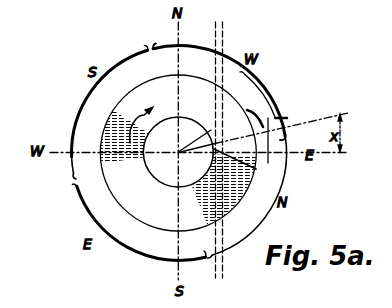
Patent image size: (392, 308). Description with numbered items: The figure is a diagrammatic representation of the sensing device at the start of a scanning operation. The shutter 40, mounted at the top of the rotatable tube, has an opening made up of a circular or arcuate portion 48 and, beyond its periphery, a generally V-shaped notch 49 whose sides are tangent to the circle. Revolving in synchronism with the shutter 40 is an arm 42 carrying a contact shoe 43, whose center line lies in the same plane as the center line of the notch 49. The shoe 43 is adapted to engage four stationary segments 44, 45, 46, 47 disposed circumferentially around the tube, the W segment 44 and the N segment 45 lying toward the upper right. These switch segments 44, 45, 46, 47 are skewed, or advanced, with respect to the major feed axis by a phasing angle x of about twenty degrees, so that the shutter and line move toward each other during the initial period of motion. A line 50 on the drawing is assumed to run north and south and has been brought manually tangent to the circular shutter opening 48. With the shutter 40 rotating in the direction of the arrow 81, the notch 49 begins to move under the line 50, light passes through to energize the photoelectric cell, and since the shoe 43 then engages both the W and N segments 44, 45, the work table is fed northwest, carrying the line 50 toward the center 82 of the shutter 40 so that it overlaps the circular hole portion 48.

The shutter 40 is at (167, 225).
The arm 42 is at (265, 127).
The contact shoe 43 is at (245, 110).
The W segment 44 is at (264, 88).
The N segment 45 is at (264, 216).
The stationary segment 46 is at (138, 253).
The stationary segment 47 is at (76, 123).
The arcuate portion 48 is at (162, 179).
The V-shaped notch 49 is at (242, 166).
The line 50 is at (223, 42).
The arrow 81 is at (145, 116).
The center 82 is at (210, 128).